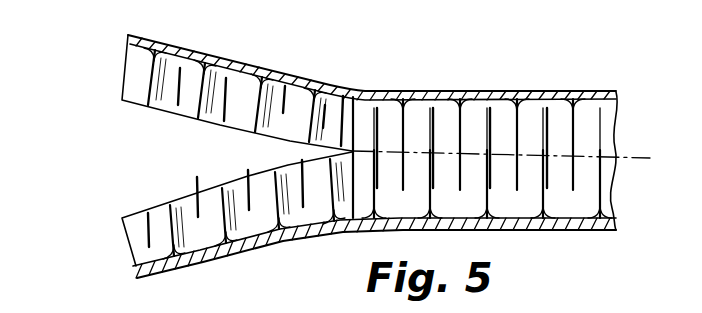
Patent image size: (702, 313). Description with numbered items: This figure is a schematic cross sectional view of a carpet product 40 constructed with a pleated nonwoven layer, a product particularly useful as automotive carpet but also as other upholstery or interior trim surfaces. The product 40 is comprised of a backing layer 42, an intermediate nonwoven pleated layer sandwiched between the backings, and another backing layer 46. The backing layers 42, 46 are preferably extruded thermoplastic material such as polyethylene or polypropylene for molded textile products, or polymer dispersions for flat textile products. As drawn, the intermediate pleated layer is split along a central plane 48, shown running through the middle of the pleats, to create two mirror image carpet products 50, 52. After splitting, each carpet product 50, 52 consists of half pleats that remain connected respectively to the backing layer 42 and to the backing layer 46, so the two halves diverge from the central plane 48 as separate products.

The product 40 is at (551, 68).
The backing layer 42 is at (597, 93).
The backing layer 46 is at (593, 232).
The central plane 48 is at (198, 212).
The carpet product 50 is at (118, 64).
The carpet product 52 is at (122, 242).